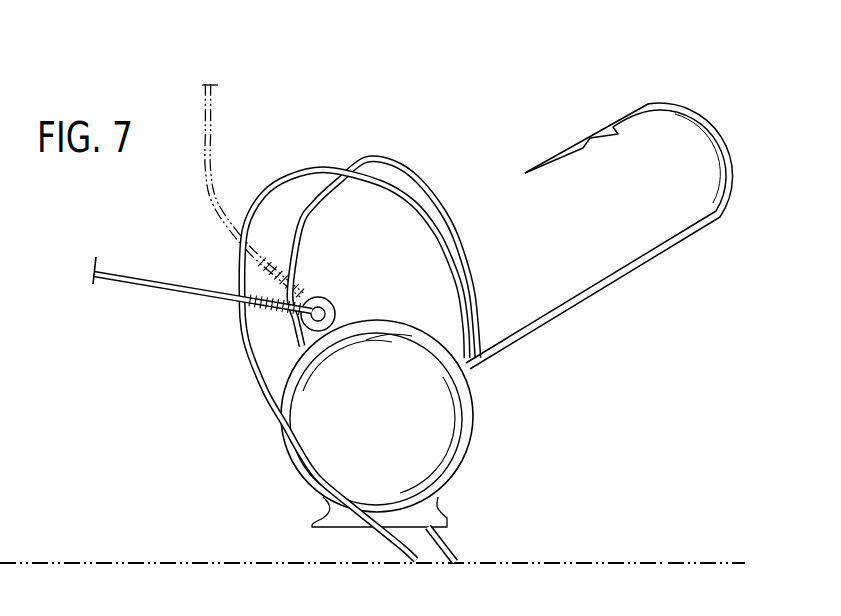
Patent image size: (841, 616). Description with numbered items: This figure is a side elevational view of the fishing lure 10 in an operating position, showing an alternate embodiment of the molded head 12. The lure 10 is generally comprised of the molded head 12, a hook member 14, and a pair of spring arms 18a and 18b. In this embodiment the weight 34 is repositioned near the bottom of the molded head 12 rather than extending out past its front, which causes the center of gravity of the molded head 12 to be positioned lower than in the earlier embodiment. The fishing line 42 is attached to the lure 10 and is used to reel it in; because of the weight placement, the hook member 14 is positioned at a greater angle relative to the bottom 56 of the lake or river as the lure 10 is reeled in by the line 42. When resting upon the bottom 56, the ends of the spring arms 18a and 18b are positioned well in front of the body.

The fishing lure 10 is at (490, 292).
The molded head 12 is at (495, 432).
The hook member 14 is at (742, 103).
The spring arm 18a is at (309, 166).
The spring arm 18b is at (381, 150).
The weight 34 is at (448, 522).
The fishing line 42 is at (124, 271).
The bottom 56 is at (664, 563).